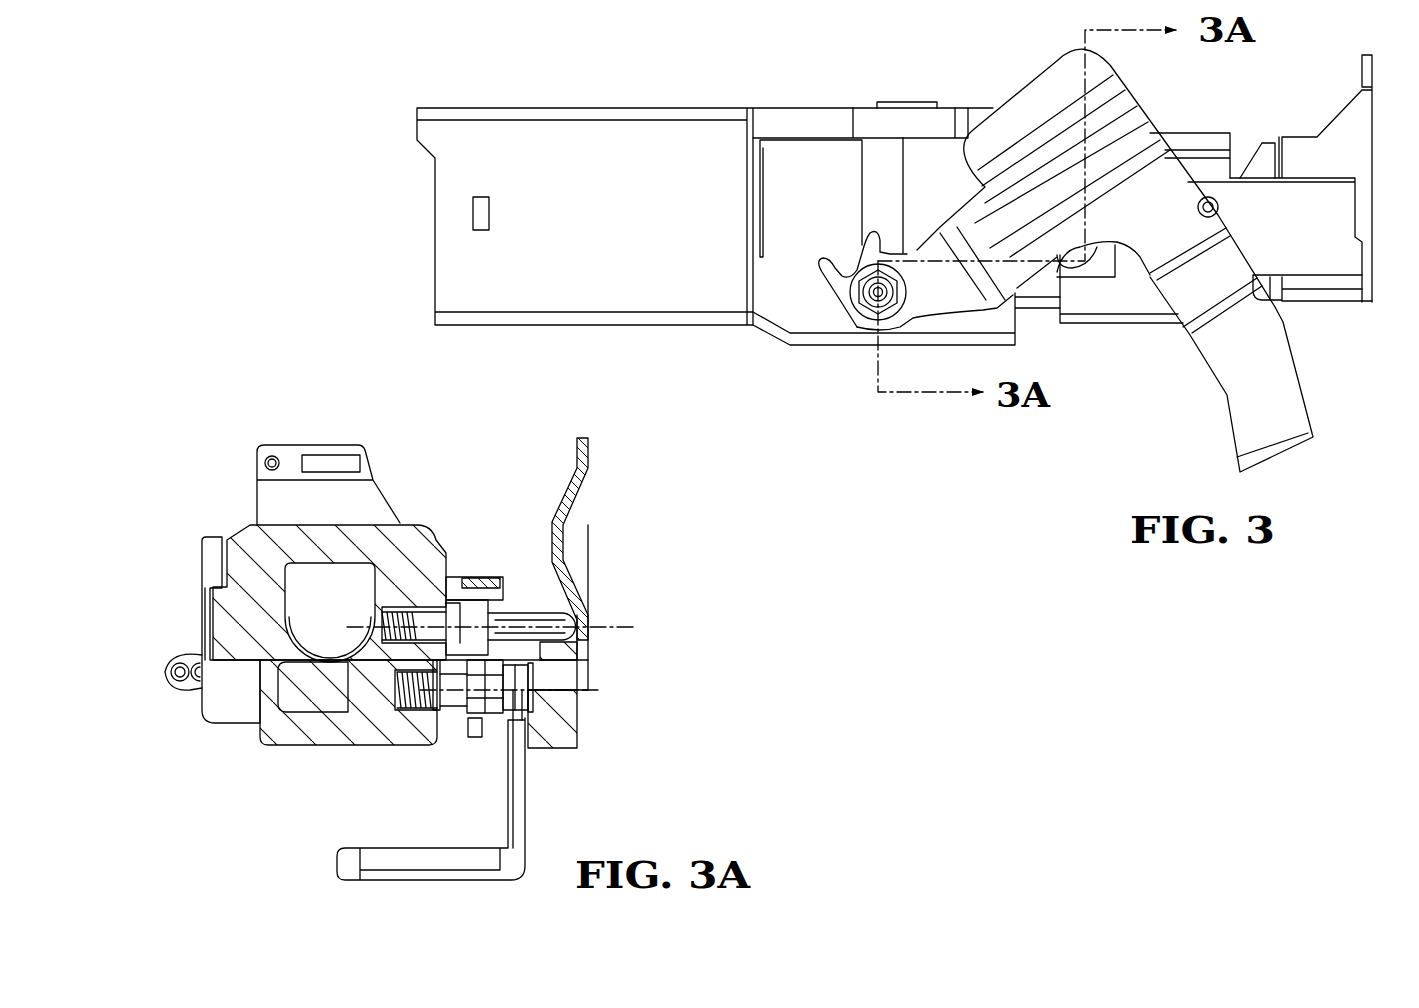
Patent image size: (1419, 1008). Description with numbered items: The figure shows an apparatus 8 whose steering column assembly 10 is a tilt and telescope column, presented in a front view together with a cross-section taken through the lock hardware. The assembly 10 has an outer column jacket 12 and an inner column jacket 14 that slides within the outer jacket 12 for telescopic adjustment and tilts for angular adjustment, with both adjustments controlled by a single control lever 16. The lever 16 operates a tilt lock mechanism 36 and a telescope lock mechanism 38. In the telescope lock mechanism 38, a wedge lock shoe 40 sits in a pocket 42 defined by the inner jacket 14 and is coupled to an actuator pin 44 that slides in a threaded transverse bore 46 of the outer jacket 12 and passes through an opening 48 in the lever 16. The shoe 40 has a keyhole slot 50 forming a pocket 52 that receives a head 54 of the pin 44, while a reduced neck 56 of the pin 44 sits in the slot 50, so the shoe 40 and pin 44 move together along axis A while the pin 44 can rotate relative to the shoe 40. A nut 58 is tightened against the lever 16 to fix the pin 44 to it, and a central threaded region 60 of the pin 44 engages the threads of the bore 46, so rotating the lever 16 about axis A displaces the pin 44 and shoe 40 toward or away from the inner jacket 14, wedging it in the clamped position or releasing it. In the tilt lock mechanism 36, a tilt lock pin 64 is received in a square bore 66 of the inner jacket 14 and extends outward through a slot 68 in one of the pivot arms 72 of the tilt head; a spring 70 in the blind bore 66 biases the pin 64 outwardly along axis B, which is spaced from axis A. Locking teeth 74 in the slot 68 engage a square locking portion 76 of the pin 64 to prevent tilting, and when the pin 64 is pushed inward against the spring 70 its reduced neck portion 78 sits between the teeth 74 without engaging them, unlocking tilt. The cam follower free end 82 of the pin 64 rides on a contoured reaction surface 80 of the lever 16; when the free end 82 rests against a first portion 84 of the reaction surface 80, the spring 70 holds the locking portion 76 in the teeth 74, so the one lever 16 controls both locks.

In FIG. 3, the apparatus 8 is at (740, 360).
In FIG. 3, the steering column assembly 10 is at (668, 66).
In FIG. 3A, the steering column assembly 10 is at (236, 456).
In FIG. 3, the outer column jacket 12 is at (500, 113).
In FIG. 3A, the inner column jacket 14 is at (400, 520).
In FIG. 3, the control lever 16 is at (1226, 385).
In FIG. 3A, the control lever 16 is at (477, 740).
In FIG. 3A, the tilt lock mechanism 36 is at (528, 598).
In FIG. 3A, the telescope lock mechanism 38 is at (460, 695).
In FIG. 3A, the wedge lock shoe 40 is at (370, 715).
In FIG. 3A, the pocket 42 is at (410, 710).
In FIG. 3A, the actuator pin 44 is at (522, 723).
In FIG. 3A, the transverse bore 46 is at (482, 725).
In FIG. 3A, the opening 48 is at (522, 700).
In FIG. 3A, the keyhole slot 50 is at (393, 710).
In FIG. 3A, the pocket 52 is at (377, 713).
In FIG. 3A, the head 54 is at (395, 690).
In FIG. 3A, the reduced neck 56 is at (380, 672).
In FIG. 3A, the nut 58 is at (527, 707).
In FIG. 3A, the central threaded region 60 is at (458, 739).
In FIG. 3A, the tilt lock pin 64 is at (588, 680).
In FIG. 3A, the square bore 66 is at (430, 617).
In FIG. 3A, the slot 68 is at (518, 608).
In FIG. 3A, the spring 70 is at (370, 650).
In FIG. 3A, the pivot arms 72 is at (482, 617).
In FIG. 3A, the locking teeth 74 is at (475, 580).
In FIG. 3A, the square locking portion 76 is at (445, 578).
In FIG. 3A, the reduced neck portion 78 is at (482, 612).
In FIG. 3A, the reaction surface 80 is at (552, 572).
In FIG. 3A, the free end 82 is at (585, 637).
In FIG. 3A, the first portion 84 is at (573, 600).
In FIG. 3A, the axis A is at (600, 690).
In FIG. 3A, the axis B is at (532, 631).